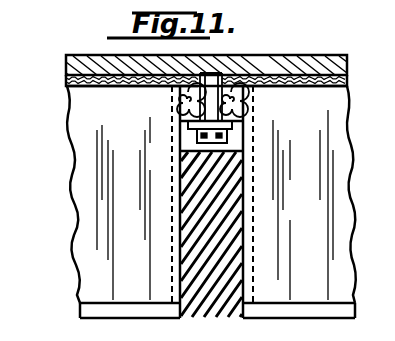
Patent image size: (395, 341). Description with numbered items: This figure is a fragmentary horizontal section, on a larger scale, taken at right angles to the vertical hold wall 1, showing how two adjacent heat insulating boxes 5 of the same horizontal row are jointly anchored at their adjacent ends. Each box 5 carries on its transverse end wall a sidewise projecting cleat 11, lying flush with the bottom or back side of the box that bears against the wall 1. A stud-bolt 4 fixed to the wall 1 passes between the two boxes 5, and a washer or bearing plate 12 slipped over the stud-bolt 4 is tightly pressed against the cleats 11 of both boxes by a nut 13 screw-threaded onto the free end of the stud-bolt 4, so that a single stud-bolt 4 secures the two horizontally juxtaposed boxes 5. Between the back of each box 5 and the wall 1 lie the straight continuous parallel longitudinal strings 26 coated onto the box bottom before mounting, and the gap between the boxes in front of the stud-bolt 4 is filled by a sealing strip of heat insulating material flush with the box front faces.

The wall 1 is at (302, 65).
The stud-bolt 4 is at (210, 83).
The heat insulating box 5 is at (83, 158).
The cleat 11 is at (176, 105).
The washer 12 is at (233, 128).
The nut 13 is at (172, 142).
The longitudinal strings 26 is at (70, 99).